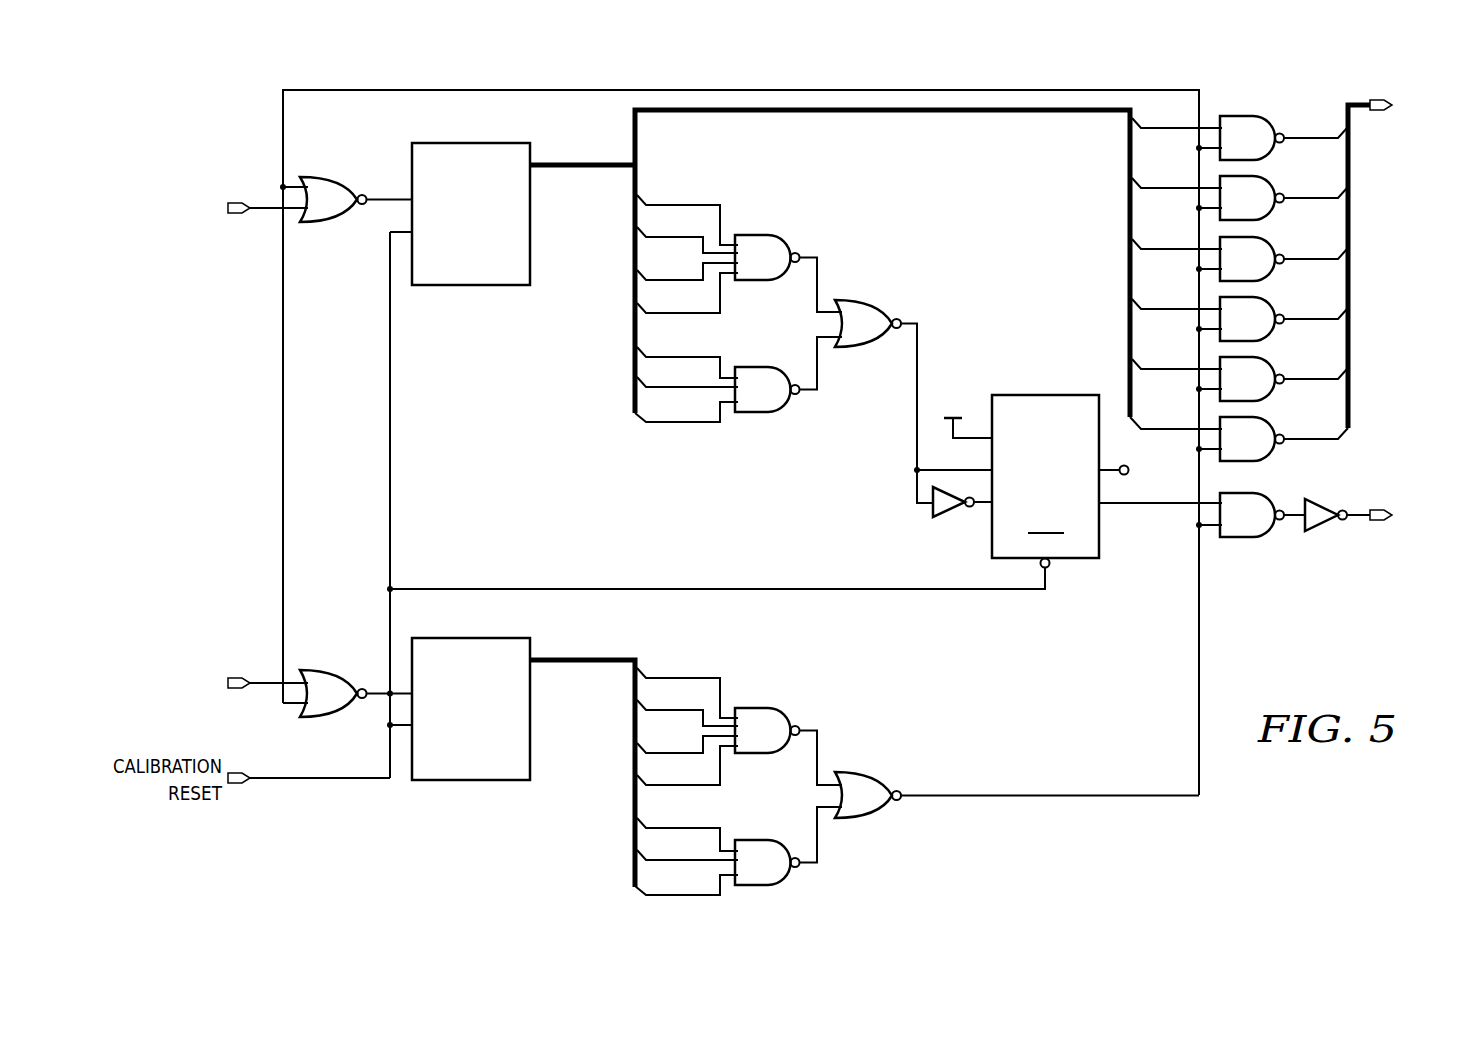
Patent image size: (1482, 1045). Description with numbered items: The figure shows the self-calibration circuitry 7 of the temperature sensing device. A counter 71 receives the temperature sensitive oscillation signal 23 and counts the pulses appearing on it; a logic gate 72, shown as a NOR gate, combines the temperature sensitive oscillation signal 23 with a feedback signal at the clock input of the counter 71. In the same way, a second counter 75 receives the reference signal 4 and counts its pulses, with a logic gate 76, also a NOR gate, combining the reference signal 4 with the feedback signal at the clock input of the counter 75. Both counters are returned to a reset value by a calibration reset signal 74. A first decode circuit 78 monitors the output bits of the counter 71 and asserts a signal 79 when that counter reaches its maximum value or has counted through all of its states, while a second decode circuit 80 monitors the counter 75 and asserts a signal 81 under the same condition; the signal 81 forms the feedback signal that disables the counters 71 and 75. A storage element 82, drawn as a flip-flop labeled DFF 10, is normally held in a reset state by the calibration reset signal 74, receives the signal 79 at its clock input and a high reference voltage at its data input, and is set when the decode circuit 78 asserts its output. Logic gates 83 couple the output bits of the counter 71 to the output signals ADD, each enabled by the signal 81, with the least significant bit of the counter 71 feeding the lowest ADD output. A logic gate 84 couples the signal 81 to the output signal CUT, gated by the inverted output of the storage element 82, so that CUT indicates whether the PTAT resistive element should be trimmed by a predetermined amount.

The calibration circuitry 7 is at (1038, 68).
The temperature sensitive oscillation signal 23 is at (268, 212).
The reference signal 4 is at (268, 688).
The logic gate 72 is at (327, 177).
The logic gate 76 is at (327, 670).
The counter 71 is at (470, 285).
The second counter 75 is at (470, 780).
The calibration reset signal 74 is at (390, 406).
The first decode circuit 78 is at (864, 254).
The signal 79 is at (917, 385).
The storage element 82 is at (779, 466).
The flip-flop DFF 10 is at (1047, 446).
The logic gates 83 is at (1288, 70).
The logic gate 84 is at (1315, 560).
The second decode circuit 80 is at (828, 690).
The signal 81 is at (1045, 797).